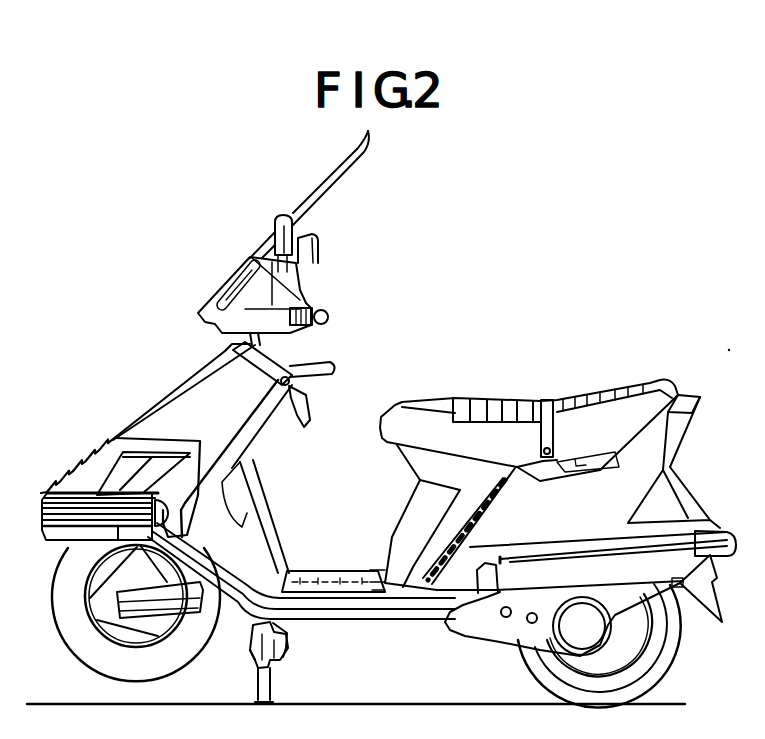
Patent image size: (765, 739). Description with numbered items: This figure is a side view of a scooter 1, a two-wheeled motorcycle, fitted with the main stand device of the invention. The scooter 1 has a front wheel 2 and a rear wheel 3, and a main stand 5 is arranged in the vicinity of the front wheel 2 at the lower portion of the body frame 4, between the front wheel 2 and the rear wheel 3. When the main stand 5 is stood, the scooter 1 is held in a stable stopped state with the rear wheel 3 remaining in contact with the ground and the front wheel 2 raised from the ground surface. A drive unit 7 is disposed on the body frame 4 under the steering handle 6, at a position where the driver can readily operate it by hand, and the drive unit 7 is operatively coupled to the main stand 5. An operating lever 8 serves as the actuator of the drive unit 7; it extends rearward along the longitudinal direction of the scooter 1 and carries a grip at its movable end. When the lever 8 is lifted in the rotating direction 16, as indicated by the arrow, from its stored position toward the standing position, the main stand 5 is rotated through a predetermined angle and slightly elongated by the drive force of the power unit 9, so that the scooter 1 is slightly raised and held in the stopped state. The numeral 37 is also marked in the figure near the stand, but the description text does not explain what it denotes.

The scooter 1 is at (450, 312).
The front wheel 2 is at (82, 652).
The rear wheel 3 is at (663, 663).
The body frame 4 is at (345, 582).
The main stand 5 is at (256, 679).
The steering handle 6 is at (324, 310).
The drive unit 7 is at (309, 358).
The operating lever 8 is at (331, 368).
The power unit 9 is at (286, 642).
The rotating direction 16 is at (333, 380).
The kick pedal 37 is at (347, 643).